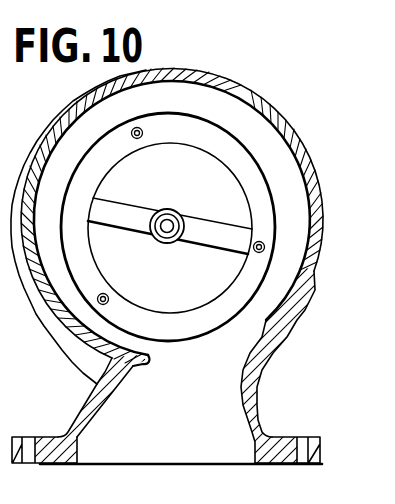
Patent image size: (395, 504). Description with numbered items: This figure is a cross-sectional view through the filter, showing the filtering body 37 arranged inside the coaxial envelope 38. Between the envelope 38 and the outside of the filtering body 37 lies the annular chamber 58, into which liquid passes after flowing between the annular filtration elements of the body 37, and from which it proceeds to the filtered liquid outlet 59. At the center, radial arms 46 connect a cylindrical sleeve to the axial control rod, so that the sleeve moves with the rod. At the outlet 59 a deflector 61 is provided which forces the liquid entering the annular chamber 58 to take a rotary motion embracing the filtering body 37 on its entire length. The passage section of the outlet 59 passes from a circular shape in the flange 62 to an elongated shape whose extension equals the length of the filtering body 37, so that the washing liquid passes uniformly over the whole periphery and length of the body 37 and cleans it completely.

The filtering body 37 is at (235, 158).
The coaxial envelope 38 is at (252, 96).
The radial arms 46 is at (157, 262).
The annular chamber 58 is at (83, 320).
The filtered liquid outlet 59 is at (205, 363).
The deflector 61 is at (139, 366).
The flange 62 is at (54, 450).